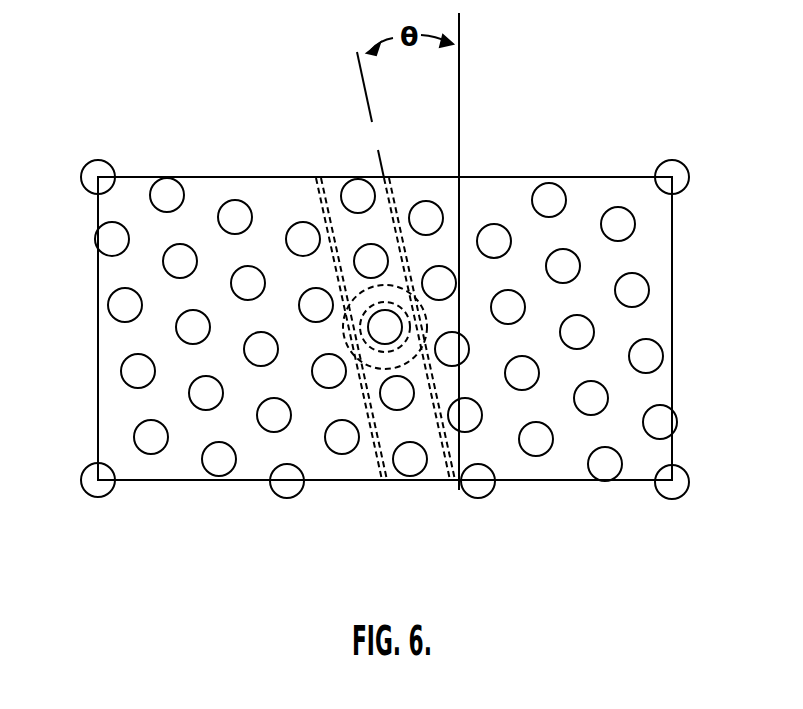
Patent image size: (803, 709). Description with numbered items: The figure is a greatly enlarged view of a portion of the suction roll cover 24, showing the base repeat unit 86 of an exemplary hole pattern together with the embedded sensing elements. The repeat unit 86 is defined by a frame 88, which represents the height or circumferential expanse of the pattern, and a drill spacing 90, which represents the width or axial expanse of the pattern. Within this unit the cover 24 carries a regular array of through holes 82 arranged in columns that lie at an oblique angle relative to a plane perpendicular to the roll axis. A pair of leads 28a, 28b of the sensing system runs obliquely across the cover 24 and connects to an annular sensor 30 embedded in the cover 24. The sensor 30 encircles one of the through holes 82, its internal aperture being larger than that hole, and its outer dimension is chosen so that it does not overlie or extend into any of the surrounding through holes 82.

The cover 24 is at (657, 240).
The base repeat unit 86 is at (682, 348).
The lead 28a is at (318, 190).
The lead 28b is at (392, 213).
The through holes 82 is at (407, 465).
The sensor 30 is at (412, 347).
The drill spacing 90 is at (672, 136).
The frame 88 is at (72, 177).